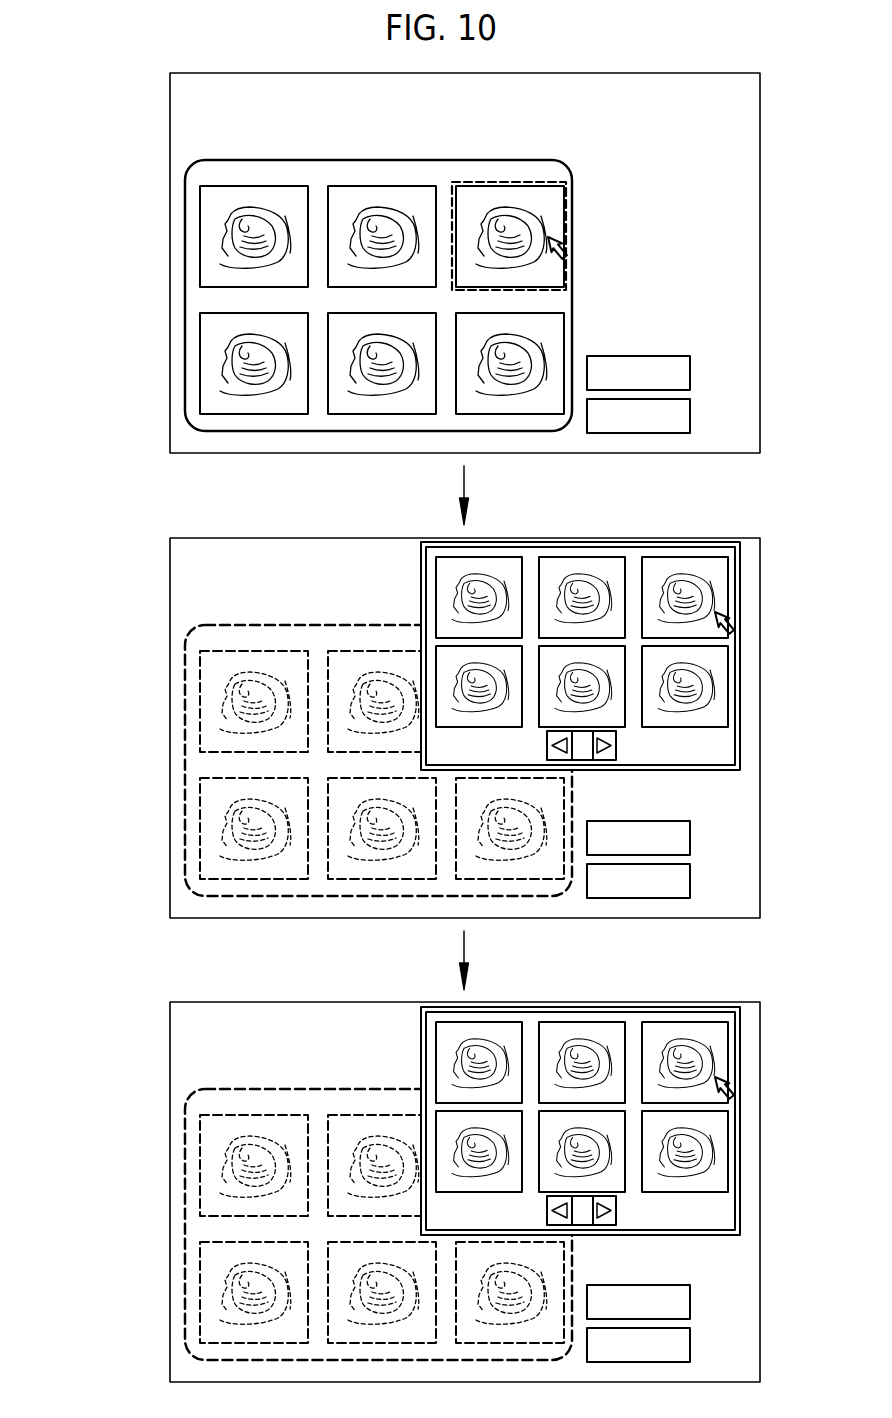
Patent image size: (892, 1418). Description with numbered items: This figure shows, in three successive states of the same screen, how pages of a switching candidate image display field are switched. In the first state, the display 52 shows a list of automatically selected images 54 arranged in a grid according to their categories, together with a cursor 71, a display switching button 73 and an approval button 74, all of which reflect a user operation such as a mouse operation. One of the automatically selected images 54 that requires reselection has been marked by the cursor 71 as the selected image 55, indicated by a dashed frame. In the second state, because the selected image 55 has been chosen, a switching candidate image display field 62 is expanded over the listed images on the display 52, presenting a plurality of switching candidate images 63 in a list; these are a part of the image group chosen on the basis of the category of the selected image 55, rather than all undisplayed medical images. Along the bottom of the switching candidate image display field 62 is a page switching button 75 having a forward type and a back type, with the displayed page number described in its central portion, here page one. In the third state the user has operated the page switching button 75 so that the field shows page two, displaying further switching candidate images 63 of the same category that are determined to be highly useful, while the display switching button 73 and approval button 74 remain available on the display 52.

The display 52 is at (170, 95).
The automatically selected image 54 is at (254, 186).
The selected image 55 is at (510, 183).
The switching candidate image display field 62 is at (583, 542).
The switching candidate image 63 is at (687, 557).
The cursor 71 is at (568, 260).
The display switching button 73 is at (692, 373).
The approval button 74 is at (692, 416).
The page switching button 75 is at (547, 746).